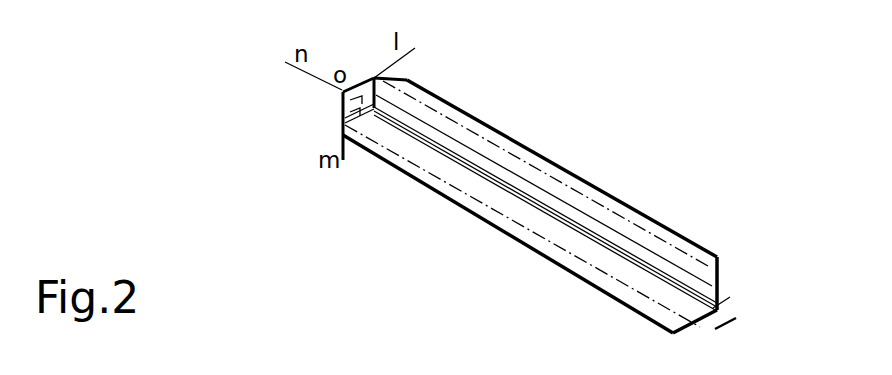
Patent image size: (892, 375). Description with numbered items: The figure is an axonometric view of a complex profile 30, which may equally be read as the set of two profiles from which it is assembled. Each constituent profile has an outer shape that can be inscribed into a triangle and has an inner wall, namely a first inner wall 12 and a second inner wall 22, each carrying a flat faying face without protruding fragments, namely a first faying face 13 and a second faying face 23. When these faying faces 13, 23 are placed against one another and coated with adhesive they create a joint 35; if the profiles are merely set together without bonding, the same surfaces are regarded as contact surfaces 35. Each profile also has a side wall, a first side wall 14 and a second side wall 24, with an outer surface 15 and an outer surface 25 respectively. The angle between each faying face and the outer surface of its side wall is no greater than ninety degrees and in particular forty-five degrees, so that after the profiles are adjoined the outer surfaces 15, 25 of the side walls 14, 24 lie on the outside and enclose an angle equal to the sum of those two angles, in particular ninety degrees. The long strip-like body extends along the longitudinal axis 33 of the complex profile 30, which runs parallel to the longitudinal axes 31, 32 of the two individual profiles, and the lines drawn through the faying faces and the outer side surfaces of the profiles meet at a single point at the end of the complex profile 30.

The first inner wall 12 is at (487, 167).
The first faying face 13 is at (507, 187).
The first side wall 14 is at (375, 79).
The outer surface of the first side wall 15 is at (380, 83).
The second inner wall 22 is at (487, 188).
The second faying face 23 is at (502, 217).
The second side wall 24 is at (345, 135).
The outer surface of the second side wall 25 is at (345, 132).
The complex profile 30 is at (343, 97).
The longitudinal axis of the first profile 31 is at (565, 198).
The longitudinal axis of the second profile 32 is at (590, 250).
The longitudinal axis of the complex profile 33 is at (736, 318).
The joint 35 is at (343, 100).